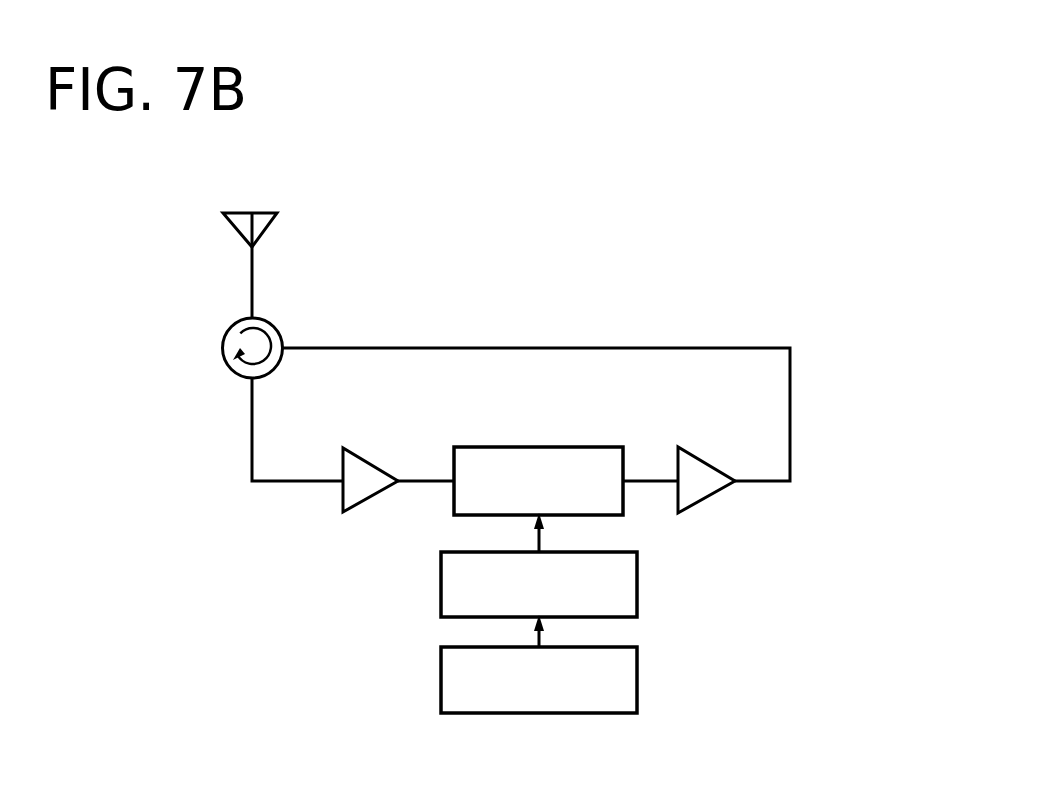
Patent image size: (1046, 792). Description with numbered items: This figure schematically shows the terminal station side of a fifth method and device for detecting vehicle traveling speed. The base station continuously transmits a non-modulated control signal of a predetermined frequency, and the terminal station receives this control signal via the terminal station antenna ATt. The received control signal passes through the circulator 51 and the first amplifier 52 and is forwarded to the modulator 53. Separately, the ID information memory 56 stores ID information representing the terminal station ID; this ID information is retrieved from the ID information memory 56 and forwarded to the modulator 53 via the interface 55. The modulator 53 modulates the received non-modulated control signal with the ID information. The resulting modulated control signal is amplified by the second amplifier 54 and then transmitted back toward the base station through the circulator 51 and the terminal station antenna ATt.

The terminal station antenna ATt is at (262, 213).
The circulator 51 is at (273, 325).
The first amplifier 52 is at (362, 456).
The modulator 53 is at (593, 447).
The second amplifier 54 is at (695, 455).
The interface 55 is at (637, 587).
The ID information memory 56 is at (637, 682).